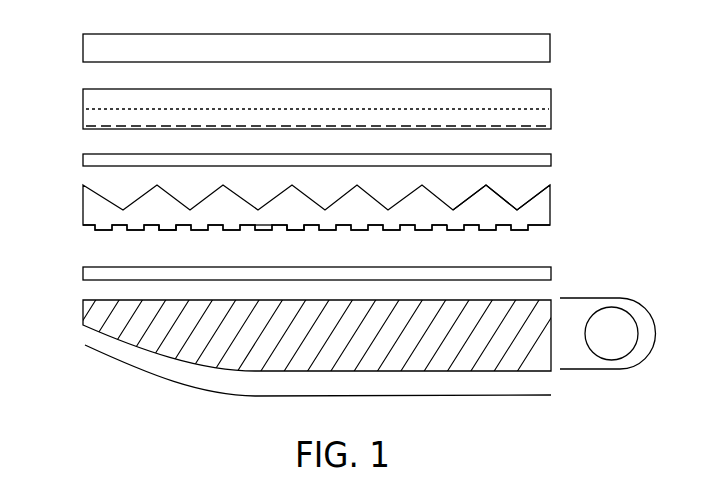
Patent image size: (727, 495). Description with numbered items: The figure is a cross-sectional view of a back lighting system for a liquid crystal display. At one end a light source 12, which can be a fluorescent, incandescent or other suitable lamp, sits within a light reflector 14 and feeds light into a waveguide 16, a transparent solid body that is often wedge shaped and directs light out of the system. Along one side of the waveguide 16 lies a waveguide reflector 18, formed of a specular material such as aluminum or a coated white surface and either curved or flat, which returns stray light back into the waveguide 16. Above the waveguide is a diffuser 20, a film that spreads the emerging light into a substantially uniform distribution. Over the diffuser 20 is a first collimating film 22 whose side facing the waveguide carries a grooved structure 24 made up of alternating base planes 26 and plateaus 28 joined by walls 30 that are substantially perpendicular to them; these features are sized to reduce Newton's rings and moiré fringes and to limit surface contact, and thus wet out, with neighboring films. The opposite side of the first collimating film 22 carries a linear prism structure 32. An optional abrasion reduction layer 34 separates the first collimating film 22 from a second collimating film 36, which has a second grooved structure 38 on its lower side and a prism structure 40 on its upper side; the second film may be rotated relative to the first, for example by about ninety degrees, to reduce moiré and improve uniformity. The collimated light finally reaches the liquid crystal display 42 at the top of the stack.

The light source 12 is at (612, 355).
The light reflector 14 is at (612, 298).
The waveguide 16 is at (83, 316).
The waveguide reflector 18 is at (113, 364).
The diffuser 20 is at (83, 273).
The first collimating film 22 is at (83, 208).
The grooved structure 24 is at (536, 231).
The base planes 26 is at (270, 229).
The plateaus 28 is at (166, 231).
The walls 30 is at (294, 231).
The prism structure 32 is at (550, 185).
The abrasion reduction layer 34 is at (83, 160).
The second collimating film 36 is at (83, 103).
The second grooved structure 38 is at (166, 130).
The prism structure 40 is at (210, 88).
The liquid crystal display 42 is at (551, 44).